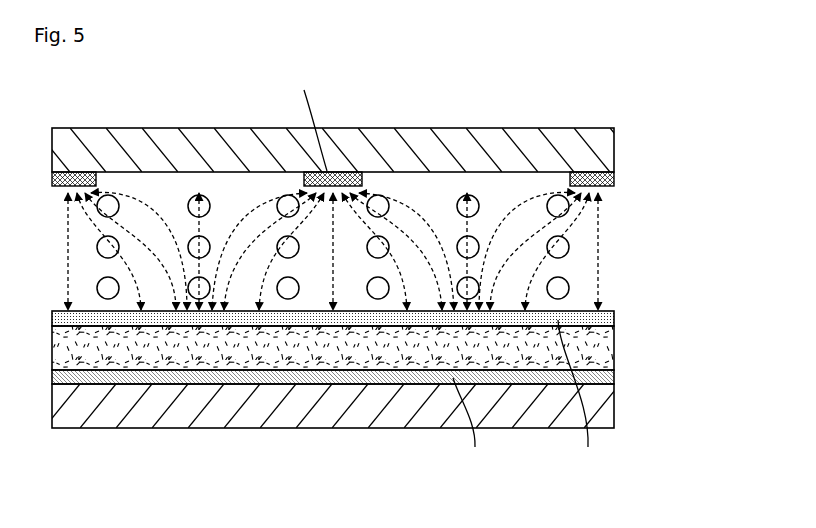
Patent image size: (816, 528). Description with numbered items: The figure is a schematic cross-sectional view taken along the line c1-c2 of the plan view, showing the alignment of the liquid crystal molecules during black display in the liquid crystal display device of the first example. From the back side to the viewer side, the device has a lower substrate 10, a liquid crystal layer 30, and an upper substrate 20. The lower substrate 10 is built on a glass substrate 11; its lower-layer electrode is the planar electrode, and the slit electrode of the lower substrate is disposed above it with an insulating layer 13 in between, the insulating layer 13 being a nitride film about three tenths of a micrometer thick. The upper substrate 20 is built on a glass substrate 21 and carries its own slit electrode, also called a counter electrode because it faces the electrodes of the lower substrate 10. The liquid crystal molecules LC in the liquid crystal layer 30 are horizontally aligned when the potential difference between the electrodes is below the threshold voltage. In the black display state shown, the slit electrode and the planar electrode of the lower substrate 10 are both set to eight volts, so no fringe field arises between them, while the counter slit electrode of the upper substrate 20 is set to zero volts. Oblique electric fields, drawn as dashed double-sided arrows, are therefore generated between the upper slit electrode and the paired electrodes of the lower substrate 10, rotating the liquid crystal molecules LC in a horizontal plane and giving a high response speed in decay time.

The upper substrate 20 is at (381, 126).
The glass substrate 21 is at (605, 158).
The line c1-c2 (section end point) c1 is at (64, 137).
The line c1-c2 (section end point) c2 is at (600, 137).
The liquid crystal layer 30 is at (398, 250).
The liquid crystal molecule LC is at (566, 243).
The lower substrate 10 is at (390, 395).
The insulating layer 13 is at (605, 352).
The glass substrate 11 is at (366, 406).